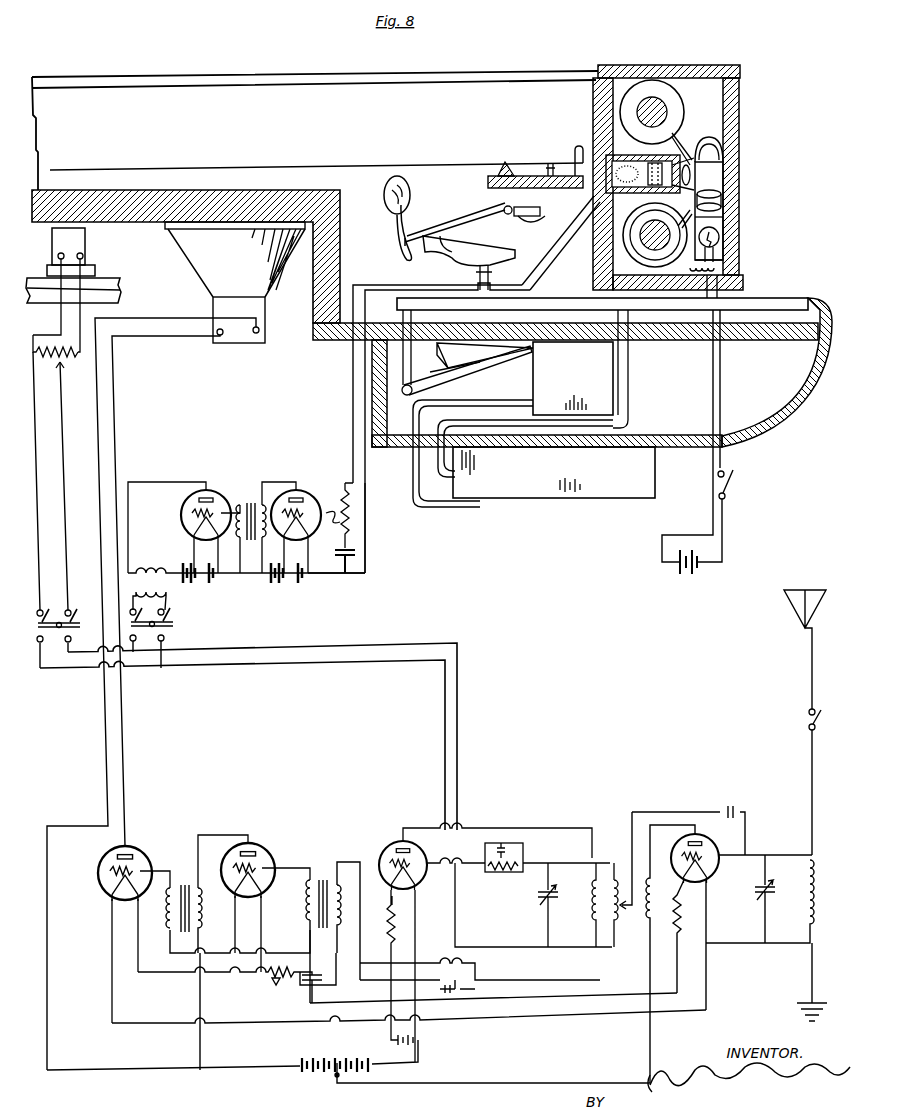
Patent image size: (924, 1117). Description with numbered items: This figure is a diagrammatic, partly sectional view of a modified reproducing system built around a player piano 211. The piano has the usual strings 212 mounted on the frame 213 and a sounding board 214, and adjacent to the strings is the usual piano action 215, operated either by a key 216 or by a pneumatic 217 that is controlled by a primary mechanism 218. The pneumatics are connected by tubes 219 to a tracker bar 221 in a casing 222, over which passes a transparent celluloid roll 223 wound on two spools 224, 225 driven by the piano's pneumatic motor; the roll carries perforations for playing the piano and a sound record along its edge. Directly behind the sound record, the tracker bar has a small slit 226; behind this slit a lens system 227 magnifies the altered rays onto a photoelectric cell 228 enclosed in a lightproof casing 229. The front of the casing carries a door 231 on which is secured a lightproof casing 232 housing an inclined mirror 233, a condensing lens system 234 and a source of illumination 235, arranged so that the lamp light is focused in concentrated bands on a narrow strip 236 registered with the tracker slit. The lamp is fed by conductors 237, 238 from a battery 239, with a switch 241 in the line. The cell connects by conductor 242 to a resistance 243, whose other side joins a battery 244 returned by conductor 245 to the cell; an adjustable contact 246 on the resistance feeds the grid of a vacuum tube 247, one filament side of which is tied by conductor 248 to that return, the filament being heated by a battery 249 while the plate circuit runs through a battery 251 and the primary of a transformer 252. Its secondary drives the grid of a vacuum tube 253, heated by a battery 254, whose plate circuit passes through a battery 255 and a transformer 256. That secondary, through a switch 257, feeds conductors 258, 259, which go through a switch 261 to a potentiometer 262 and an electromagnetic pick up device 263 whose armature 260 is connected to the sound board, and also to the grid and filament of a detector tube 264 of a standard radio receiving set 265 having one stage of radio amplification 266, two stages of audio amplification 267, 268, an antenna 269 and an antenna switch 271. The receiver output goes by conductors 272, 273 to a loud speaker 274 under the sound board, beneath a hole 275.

The player piano 211 is at (490, 76).
The strings 212 is at (369, 163).
The frame 213 is at (488, 182).
The sounding board 214 is at (148, 190).
The piano action 215 is at (464, 233).
The key 216 is at (762, 300).
The pneumatic 217 is at (467, 352).
The primary mechanism 218 is at (573, 378).
The tubes 219 is at (630, 367).
The tracker bar 221 is at (675, 160).
The casing 222 is at (628, 78).
The roll 223 is at (668, 122).
The spool 224 is at (660, 110).
The spool 225 is at (660, 255).
The slit 226 is at (728, 182).
The lens system 227 is at (605, 156).
The photoelectric cell 228 is at (607, 165).
The lightproof casing 229 is at (606, 238).
The door 231 is at (730, 216).
The lightproof casing 232 is at (733, 252).
The inclined mirror 233 is at (738, 125).
The condensing lens system 234 is at (725, 196).
The source of illumination 235 is at (722, 235).
The narrow strip 236 is at (725, 158).
The conductor 237 is at (722, 364).
The conductor 238 is at (715, 402).
The battery 239 is at (692, 572).
The switch 241 is at (731, 488).
The conductor 242 is at (353, 421).
The resistance 243 is at (345, 490).
The battery 244 is at (358, 552).
The conductor 245 is at (367, 522).
The adjustable contact 246 is at (335, 524).
The vacuum tube 247 is at (290, 490).
The conductor 248 is at (330, 576).
The battery 249 is at (300, 586).
The battery 251 is at (278, 586).
The transformer 252 is at (258, 527).
The vacuum tube 253 is at (194, 491).
The battery 254 is at (226, 582).
The battery 255 is at (186, 582).
The transformer 256 is at (150, 571).
The switch 257 is at (151, 638).
The conductor 258 is at (78, 672).
The conductor 259 is at (96, 690).
The armature 260 is at (85, 226).
The switch 261 is at (56, 510).
The potentiometer 262 is at (68, 345).
The electromagnetic pick up device 263 is at (86, 256).
The detector tube 264 is at (393, 846).
The radio receiving set 265 is at (536, 860).
The stage of radio amplification 266 is at (658, 812).
The stage of audio amplification 267 is at (335, 862).
The stage of audio amplification 268 is at (139, 925).
The antenna 269 is at (803, 614).
The switch 271 is at (806, 724).
The conductor 272 is at (108, 757).
The conductor 273 is at (121, 792).
The loud speaker 274 is at (235, 282).
The hole 275 is at (289, 190).